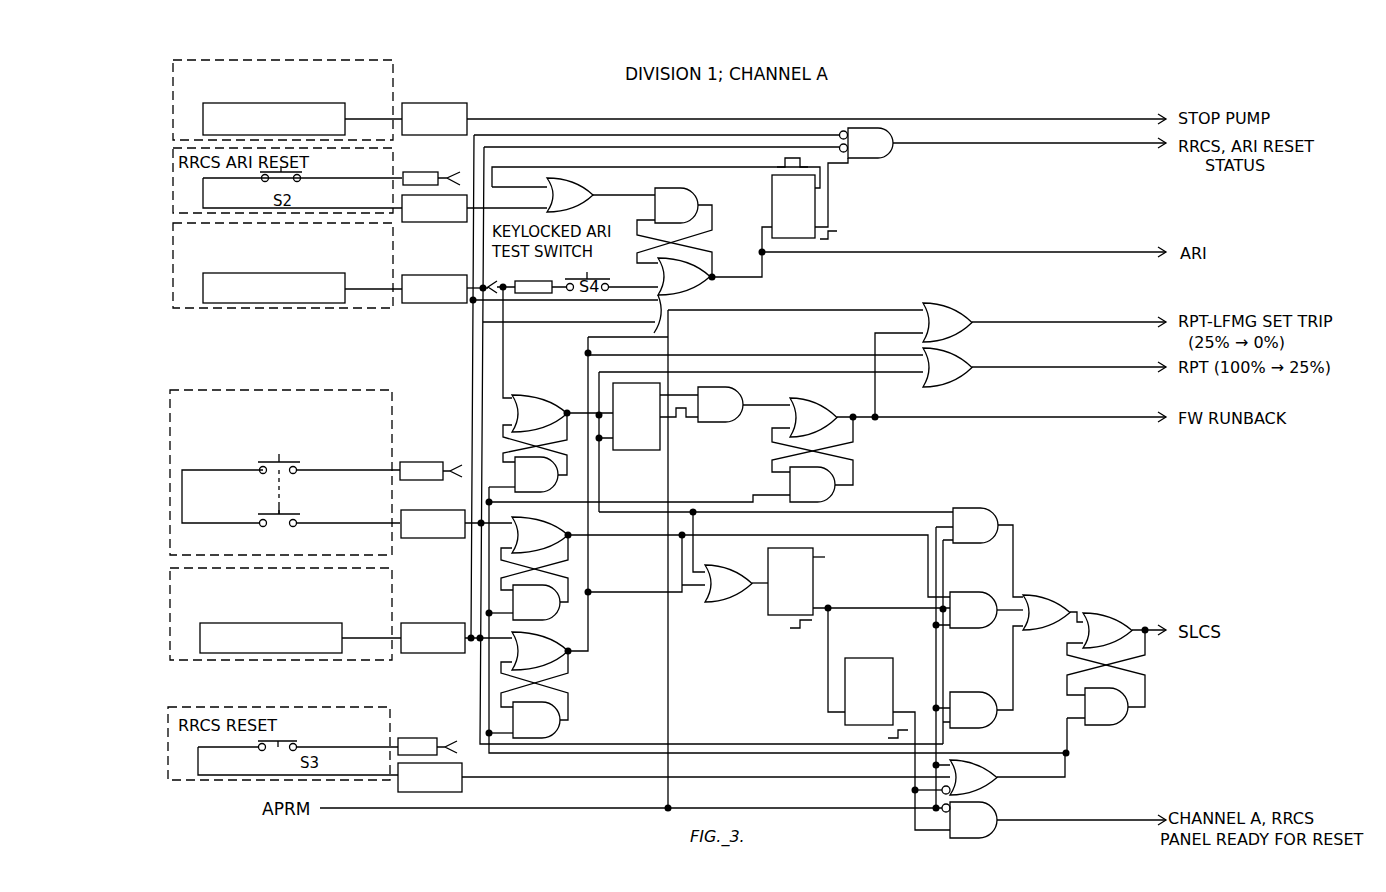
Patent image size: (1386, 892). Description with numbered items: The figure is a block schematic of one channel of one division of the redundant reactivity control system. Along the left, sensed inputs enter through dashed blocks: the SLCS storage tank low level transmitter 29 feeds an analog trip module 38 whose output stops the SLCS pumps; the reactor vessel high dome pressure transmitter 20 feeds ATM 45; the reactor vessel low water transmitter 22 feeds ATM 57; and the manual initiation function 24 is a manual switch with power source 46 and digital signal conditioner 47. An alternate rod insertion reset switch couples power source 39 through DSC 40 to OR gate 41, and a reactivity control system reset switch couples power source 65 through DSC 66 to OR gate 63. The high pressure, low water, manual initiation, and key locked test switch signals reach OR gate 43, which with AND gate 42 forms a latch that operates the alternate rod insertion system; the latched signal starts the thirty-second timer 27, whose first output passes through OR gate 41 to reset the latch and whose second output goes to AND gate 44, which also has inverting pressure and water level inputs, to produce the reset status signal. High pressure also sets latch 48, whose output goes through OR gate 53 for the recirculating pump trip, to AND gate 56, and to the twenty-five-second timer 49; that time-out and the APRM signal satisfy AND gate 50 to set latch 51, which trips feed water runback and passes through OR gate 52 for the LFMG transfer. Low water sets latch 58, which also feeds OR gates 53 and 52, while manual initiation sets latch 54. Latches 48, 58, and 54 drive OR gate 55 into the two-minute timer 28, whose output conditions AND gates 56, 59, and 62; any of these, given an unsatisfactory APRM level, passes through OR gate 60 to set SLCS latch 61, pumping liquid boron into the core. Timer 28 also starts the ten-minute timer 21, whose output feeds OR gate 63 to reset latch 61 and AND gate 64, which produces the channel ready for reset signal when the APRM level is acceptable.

The reactor vessel high dome pressure transmitter 20 is at (360, 305).
The timer 21 is at (865, 658).
The reactor vessel low water transmitter 22 is at (372, 590).
The redundant reactivity control system manual initiation function 24 is at (380, 432).
The timer 27 is at (766, 192).
The timer 28 is at (813, 573).
The transmitter 29 is at (383, 93).
The analog trip module 38 is at (430, 103).
The power source 39 is at (420, 172).
The digital signal conditioner 40 is at (430, 222).
The OR gate 41 is at (593, 183).
The AND gate 42 is at (676, 188).
The OR gate 43 is at (698, 290).
The AND gate 44 is at (893, 132).
The analog trip module 45 is at (430, 275).
The power source 46 is at (420, 462).
The digital signal conditioner for switch contacts 47 is at (430, 538).
The latch 48 is at (562, 432).
The timer 49 is at (625, 450).
The AND gate 50 is at (725, 387).
The latch 51 is at (862, 456).
The OR gate 52 is at (955, 303).
The OR gate 53 is at (955, 348).
The latch 54 is at (568, 586).
The OR gate 55 is at (715, 565).
The AND gate 56 is at (975, 508).
The analog trip module 57 is at (425, 623).
The latch 58 is at (578, 687).
The AND gate 59 is at (968, 592).
The OR gate 60 is at (1045, 595).
The latch 61 is at (1160, 669).
The AND gate 62 is at (968, 692).
The OR gate 63 is at (992, 770).
The AND gate 64 is at (985, 803).
The power source 65 is at (418, 738).
The digital signal conditioner 66 is at (455, 792).